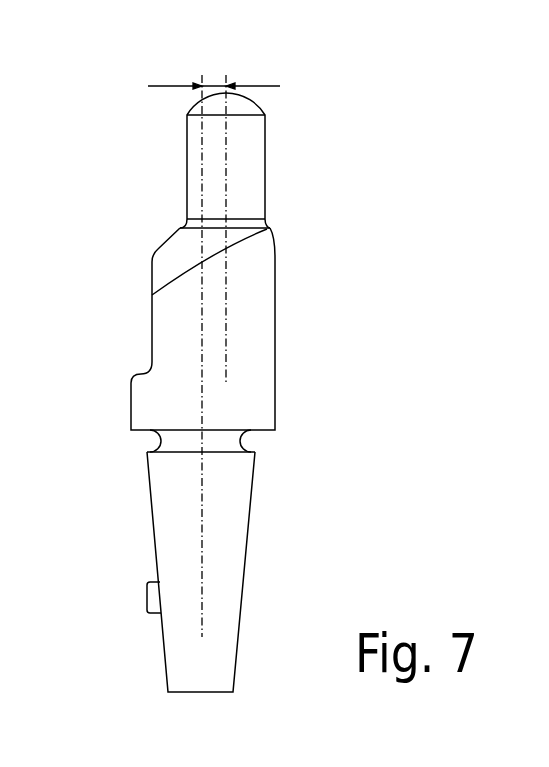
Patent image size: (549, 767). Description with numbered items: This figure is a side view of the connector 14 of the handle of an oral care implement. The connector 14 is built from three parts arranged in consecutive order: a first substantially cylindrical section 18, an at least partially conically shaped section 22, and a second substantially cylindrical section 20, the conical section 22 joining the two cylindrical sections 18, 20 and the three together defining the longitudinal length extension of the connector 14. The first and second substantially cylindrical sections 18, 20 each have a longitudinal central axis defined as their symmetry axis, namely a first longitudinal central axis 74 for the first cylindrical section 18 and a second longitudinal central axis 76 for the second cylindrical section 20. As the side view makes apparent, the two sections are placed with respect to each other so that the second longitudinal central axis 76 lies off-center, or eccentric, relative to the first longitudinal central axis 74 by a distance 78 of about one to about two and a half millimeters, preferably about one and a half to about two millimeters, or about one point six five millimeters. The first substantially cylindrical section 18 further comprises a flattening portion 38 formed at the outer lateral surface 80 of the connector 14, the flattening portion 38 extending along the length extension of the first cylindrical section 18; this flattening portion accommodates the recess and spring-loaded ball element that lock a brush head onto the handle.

The connector 14 is at (318, 267).
The first substantially cylindrical section 18 is at (253, 364).
The second substantially cylindrical section 20 is at (242, 177).
The at least partially conically shaped section 22 is at (170, 240).
The flattening portion 38 is at (151, 311).
The first longitudinal central axis 74 is at (198, 135).
The second longitudinal central axis 76 is at (227, 137).
The distance 78 is at (212, 84).
The outer lateral surface 80 is at (277, 291).